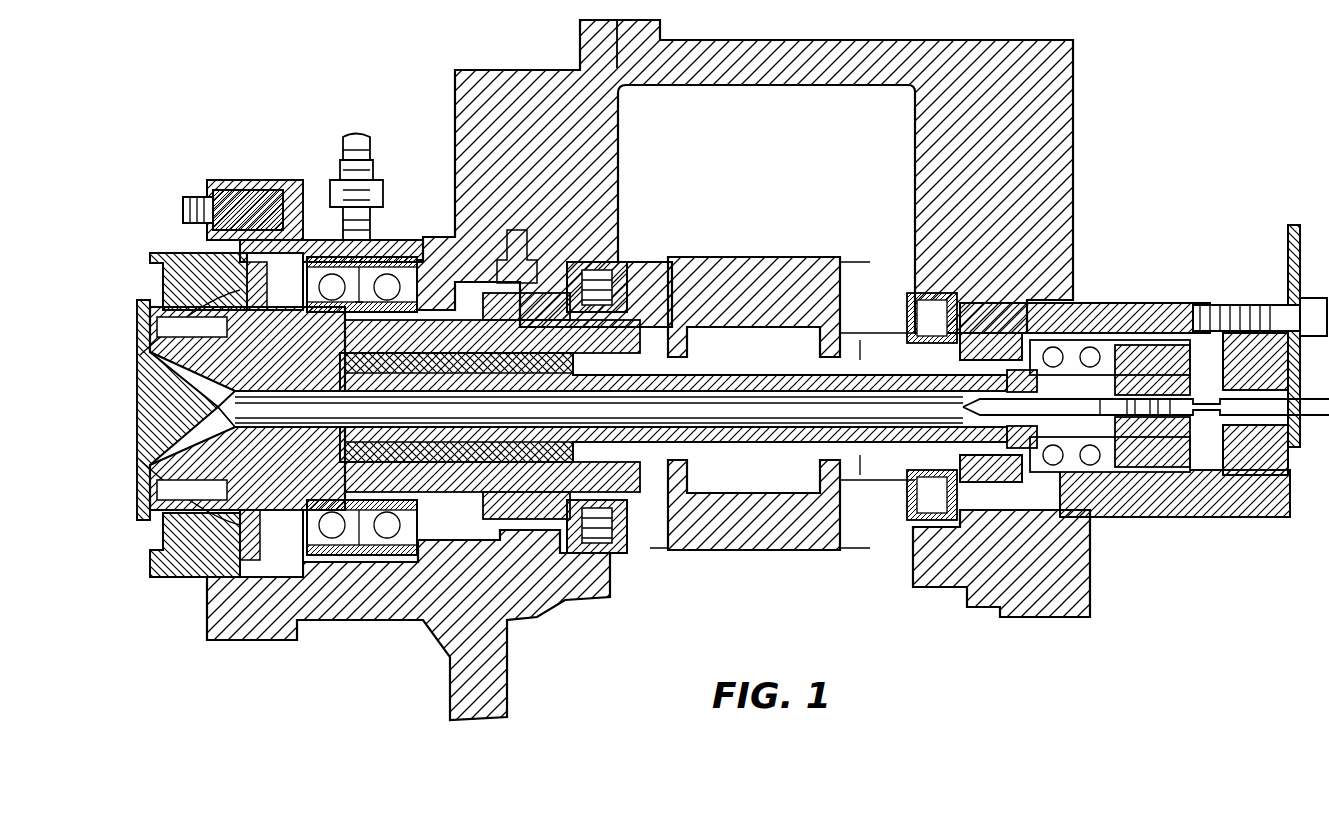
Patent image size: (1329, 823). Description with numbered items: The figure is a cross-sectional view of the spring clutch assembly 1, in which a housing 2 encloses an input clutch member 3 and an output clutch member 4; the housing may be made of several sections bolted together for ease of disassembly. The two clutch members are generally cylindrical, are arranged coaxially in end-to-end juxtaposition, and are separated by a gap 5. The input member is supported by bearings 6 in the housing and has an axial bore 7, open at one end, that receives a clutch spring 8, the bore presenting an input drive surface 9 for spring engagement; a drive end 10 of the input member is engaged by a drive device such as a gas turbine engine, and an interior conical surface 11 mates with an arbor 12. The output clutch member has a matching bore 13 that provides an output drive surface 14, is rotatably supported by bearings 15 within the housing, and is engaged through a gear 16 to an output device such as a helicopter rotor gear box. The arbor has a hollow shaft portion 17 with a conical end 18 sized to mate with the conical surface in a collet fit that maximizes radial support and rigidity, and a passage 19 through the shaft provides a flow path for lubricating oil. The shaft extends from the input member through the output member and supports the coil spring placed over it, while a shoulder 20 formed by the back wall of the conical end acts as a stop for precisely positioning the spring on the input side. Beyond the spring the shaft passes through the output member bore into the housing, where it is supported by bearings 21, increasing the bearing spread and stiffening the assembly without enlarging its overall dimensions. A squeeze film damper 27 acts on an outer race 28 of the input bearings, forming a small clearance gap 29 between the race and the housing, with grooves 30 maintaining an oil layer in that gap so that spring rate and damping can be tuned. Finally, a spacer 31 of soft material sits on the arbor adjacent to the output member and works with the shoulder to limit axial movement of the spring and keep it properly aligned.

The spring clutch assembly 1 is at (1097, 140).
The housing 2 is at (1060, 182).
The input clutch member 3 is at (241, 415).
The output clutch member 4 is at (620, 495).
The gap 5 is at (472, 330).
The bearings 6 is at (385, 565).
The bore 7 is at (473, 485).
The clutch spring 8 is at (526, 402).
The input drive surface 9 is at (455, 470).
The drive end 10 is at (210, 249).
The conical surface 11 is at (216, 545).
The arbor 12 is at (275, 543).
The bore 13 is at (635, 322).
The output drive surface 14 is at (560, 378).
The bearings 15 is at (633, 262).
The gear 16 is at (790, 553).
The shaft portion 17 is at (742, 385).
The conical end 18 is at (240, 335).
The passage 19 is at (792, 405).
The shoulder 20 is at (805, 375).
The bearings 21 is at (1100, 522).
The squeeze film damper 27 is at (335, 248).
The outer race 28 is at (395, 252).
The clearance gap 29 is at (372, 205).
The grooves 30 is at (437, 242).
The spacer 31 is at (640, 470).